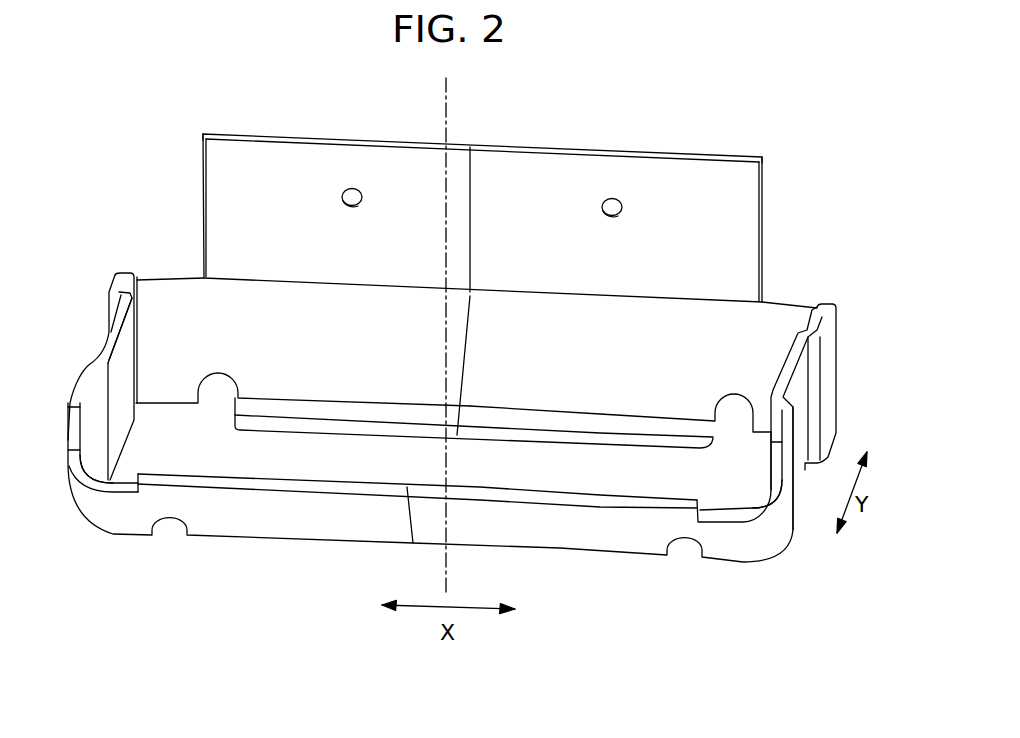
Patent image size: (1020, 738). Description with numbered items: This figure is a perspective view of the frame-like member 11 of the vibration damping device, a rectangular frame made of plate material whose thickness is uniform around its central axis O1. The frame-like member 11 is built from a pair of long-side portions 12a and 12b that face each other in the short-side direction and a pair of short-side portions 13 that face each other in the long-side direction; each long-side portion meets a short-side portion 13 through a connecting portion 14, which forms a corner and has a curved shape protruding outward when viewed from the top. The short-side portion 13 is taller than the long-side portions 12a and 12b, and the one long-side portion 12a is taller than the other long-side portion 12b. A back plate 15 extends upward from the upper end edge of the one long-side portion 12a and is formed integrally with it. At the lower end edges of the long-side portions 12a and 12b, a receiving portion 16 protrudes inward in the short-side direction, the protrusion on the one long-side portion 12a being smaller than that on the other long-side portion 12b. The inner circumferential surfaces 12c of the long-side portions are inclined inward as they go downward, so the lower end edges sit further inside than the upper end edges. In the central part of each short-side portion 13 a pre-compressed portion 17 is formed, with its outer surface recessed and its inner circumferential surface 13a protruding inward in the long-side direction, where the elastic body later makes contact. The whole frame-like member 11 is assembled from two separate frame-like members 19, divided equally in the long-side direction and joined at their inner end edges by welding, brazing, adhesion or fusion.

The frame-like member 11 is at (108, 540).
The one long-side portion 12a is at (748, 313).
The other long-side portion 12b is at (290, 517).
The inner circumferential surface 12c is at (230, 323).
The short-side portion 13 is at (78, 386).
The inner circumferential surface 13a is at (124, 357).
The connecting portion 14 is at (97, 487).
The back plate 15 is at (700, 168).
The receiving portion 16 is at (655, 445).
The pre-compressed portion 17 is at (110, 345).
The separate frame-like member 19 is at (203, 132).
The central axis O1 is at (447, 95).